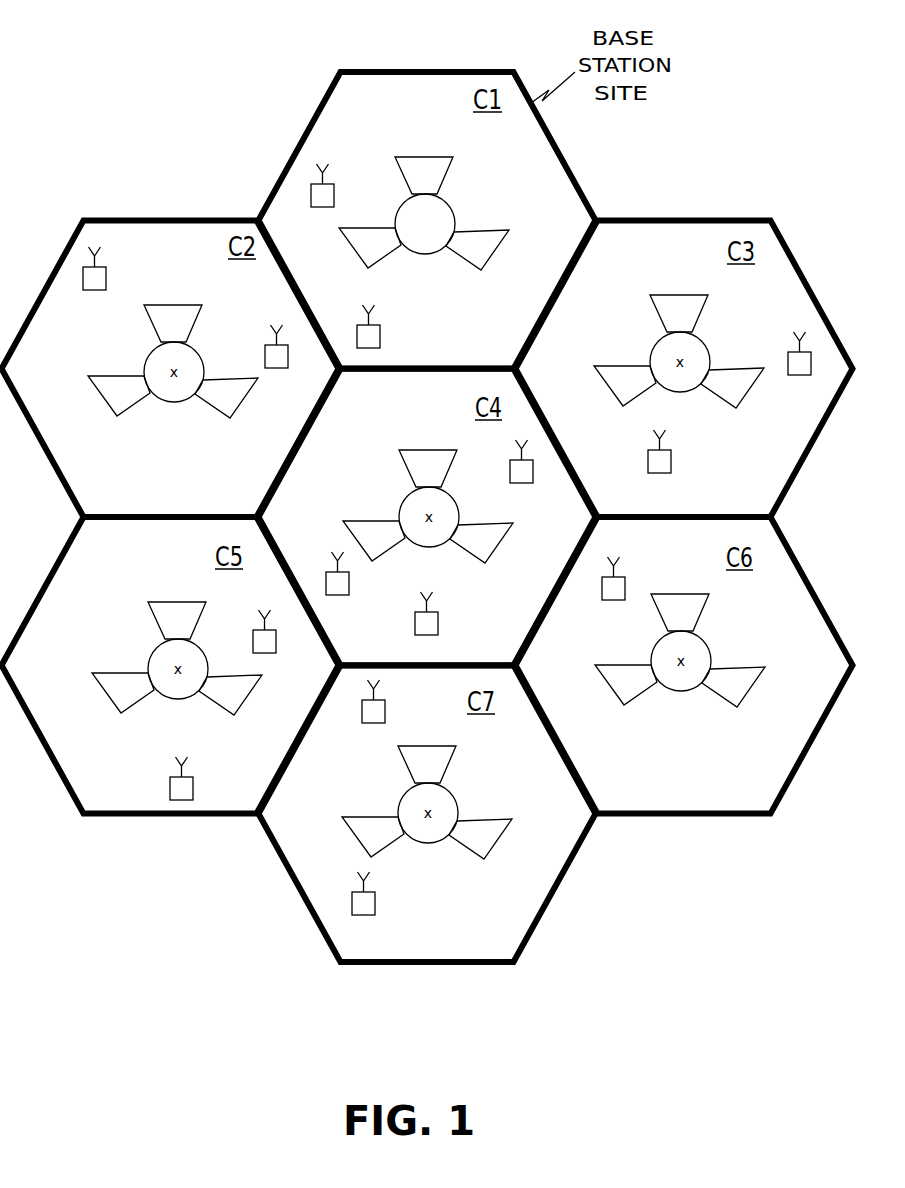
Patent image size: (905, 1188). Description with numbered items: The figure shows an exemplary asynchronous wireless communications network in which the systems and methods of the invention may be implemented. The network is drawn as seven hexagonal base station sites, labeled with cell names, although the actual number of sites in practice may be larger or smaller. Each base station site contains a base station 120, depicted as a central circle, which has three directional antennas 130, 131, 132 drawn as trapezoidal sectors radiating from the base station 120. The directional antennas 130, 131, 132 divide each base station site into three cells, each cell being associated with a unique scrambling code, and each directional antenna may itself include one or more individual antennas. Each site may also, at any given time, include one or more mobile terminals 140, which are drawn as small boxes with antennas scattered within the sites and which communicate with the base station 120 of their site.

The base station 120 is at (428, 197).
The directional antenna 130 is at (356, 262).
The directional antenna 131 is at (495, 261).
The directional antenna 132 is at (424, 145).
The mobile terminal 140 is at (413, 318).